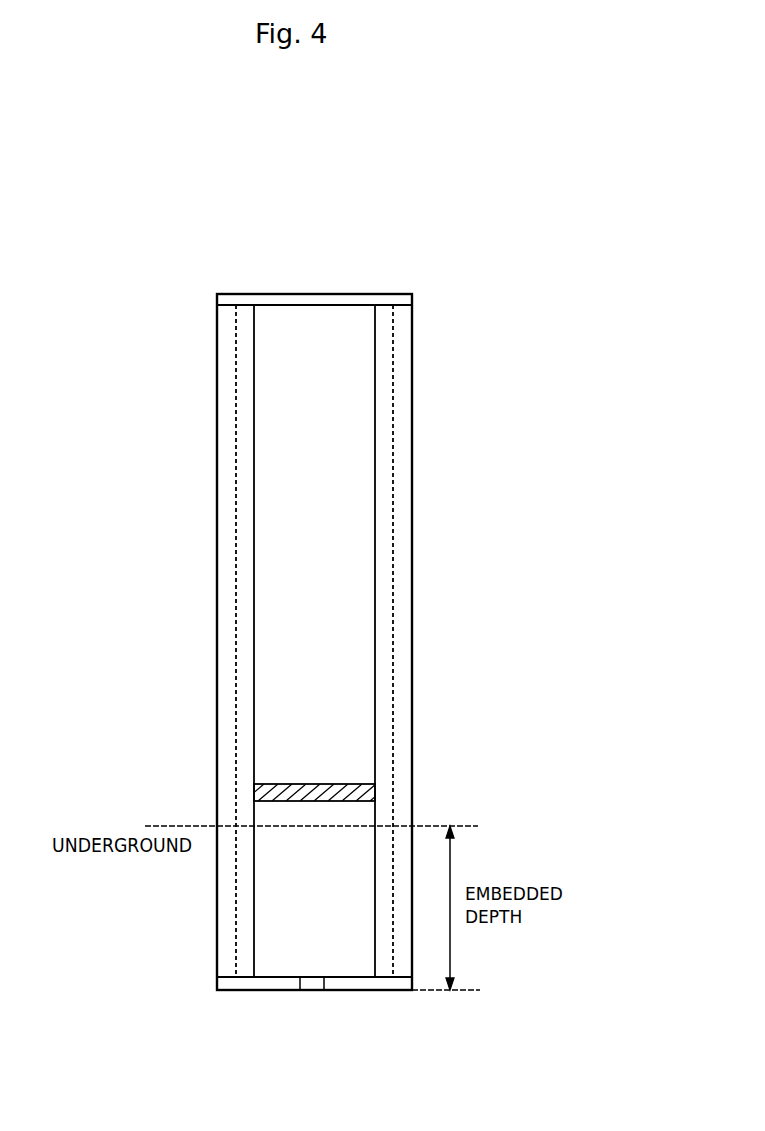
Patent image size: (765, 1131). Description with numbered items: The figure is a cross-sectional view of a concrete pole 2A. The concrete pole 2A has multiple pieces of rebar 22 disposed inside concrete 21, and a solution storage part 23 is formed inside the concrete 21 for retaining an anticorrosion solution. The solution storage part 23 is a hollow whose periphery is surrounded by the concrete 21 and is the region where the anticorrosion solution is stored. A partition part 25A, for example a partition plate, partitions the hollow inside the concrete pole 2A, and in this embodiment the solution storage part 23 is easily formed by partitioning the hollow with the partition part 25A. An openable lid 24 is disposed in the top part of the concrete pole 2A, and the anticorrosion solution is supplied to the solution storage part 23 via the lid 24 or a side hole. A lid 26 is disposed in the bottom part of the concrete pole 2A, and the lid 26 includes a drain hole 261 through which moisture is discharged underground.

The concrete pole 2A is at (429, 255).
The concrete 21 is at (222, 392).
The rebar 22 is at (236, 470).
The solution storage part 23 is at (352, 540).
The lid 24 is at (218, 296).
The partition part 25A is at (254, 790).
The lid 26 is at (222, 980).
The drain hole 261 is at (310, 992).